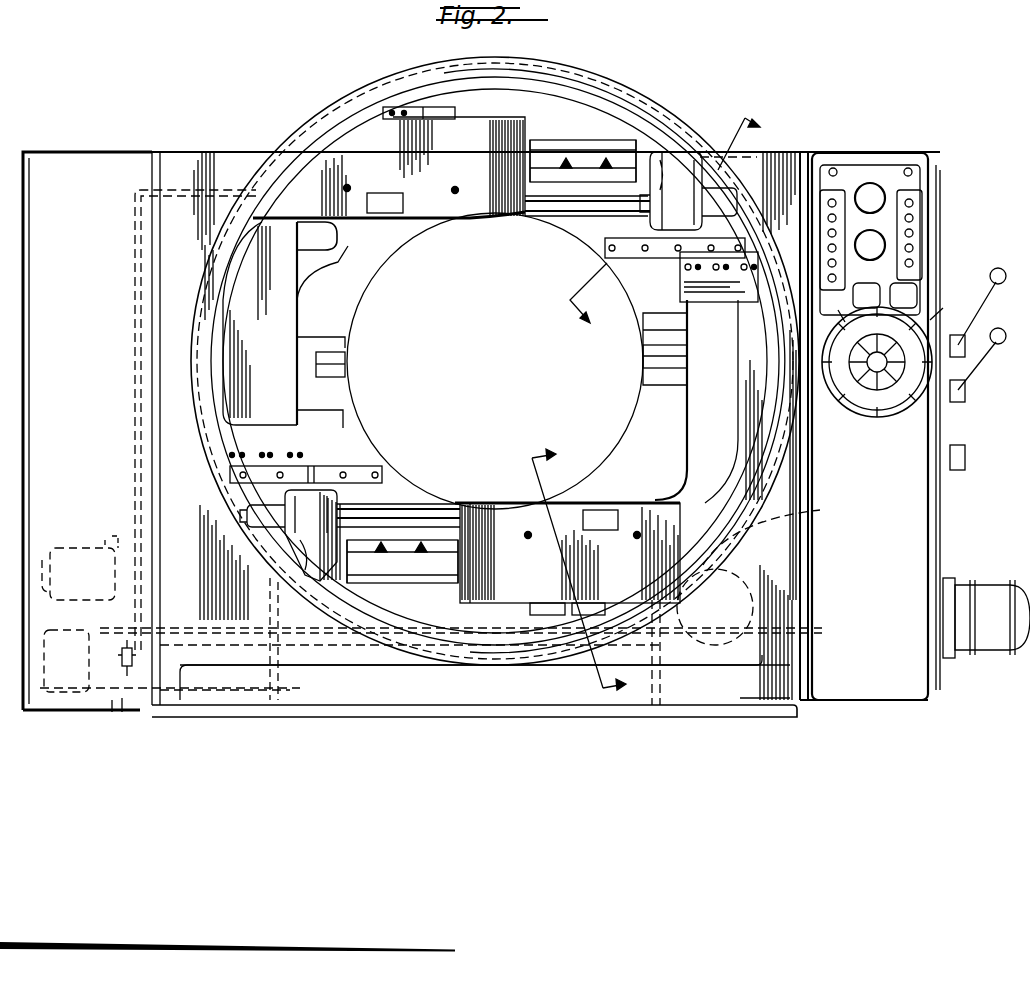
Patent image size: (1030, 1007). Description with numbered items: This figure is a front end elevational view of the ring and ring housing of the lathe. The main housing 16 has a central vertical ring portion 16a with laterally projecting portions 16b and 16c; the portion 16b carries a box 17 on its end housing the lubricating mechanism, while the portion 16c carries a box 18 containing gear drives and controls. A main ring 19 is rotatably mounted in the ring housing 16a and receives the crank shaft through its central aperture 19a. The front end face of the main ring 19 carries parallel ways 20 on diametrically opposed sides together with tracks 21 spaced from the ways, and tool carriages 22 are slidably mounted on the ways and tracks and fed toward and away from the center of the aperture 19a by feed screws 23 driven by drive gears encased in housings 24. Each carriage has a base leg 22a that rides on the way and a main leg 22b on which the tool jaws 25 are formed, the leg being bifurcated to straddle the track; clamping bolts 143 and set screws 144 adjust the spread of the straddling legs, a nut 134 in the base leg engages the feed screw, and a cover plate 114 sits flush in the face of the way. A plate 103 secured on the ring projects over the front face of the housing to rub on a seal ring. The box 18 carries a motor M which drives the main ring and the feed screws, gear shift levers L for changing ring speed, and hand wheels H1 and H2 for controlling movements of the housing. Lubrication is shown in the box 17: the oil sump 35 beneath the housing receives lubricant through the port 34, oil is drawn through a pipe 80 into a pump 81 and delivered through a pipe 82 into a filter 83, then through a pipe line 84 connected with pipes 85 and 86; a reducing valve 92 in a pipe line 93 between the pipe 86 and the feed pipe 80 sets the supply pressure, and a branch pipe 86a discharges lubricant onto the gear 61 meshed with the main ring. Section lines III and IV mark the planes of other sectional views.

The main housing 16 is at (648, 96).
The central vertical ring portion 16a is at (585, 72).
The laterally projecting portion 16b is at (197, 158).
The laterally projecting portion 16c is at (790, 162).
The box 17 is at (108, 158).
The box 18 is at (860, 155).
The main ring 19 is at (588, 225).
The central aperture 19a is at (408, 296).
The ways 20 is at (560, 144).
The tracks 21 is at (655, 258).
The tool carriages 22 is at (432, 210).
The base leg 22a is at (478, 218).
The main leg 22b is at (350, 322).
The feed screws 23 is at (545, 212).
The housings 24 is at (690, 190).
The jaws 25 is at (348, 388).
The port 34 is at (470, 668).
The oil sump 35 is at (450, 690).
The gear 61 is at (722, 575).
The pipe 80 is at (243, 695).
The pump 81 is at (72, 700).
The pipe 82 is at (30, 622).
The filter 83 is at (68, 550).
The pipe line 84 is at (112, 540).
The pipe 85 is at (132, 432).
The pipe 86 is at (140, 588).
The branch pipe 86a is at (783, 536).
The reducing valve 92 is at (124, 650).
The pipe line 93 is at (115, 708).
The plate 103 is at (670, 128).
The cover plate 114 is at (598, 155).
The nut 134 is at (405, 200).
The clamping bolts 143 is at (690, 266).
The set screw 144 is at (722, 270).
The hand wheel H1 is at (852, 410).
The hand wheel H2 is at (878, 408).
The gear shift levers L is at (975, 358).
The motor M is at (988, 590).
The section line III- III is at (674, 225).
The section line IV- IV is at (589, 570).